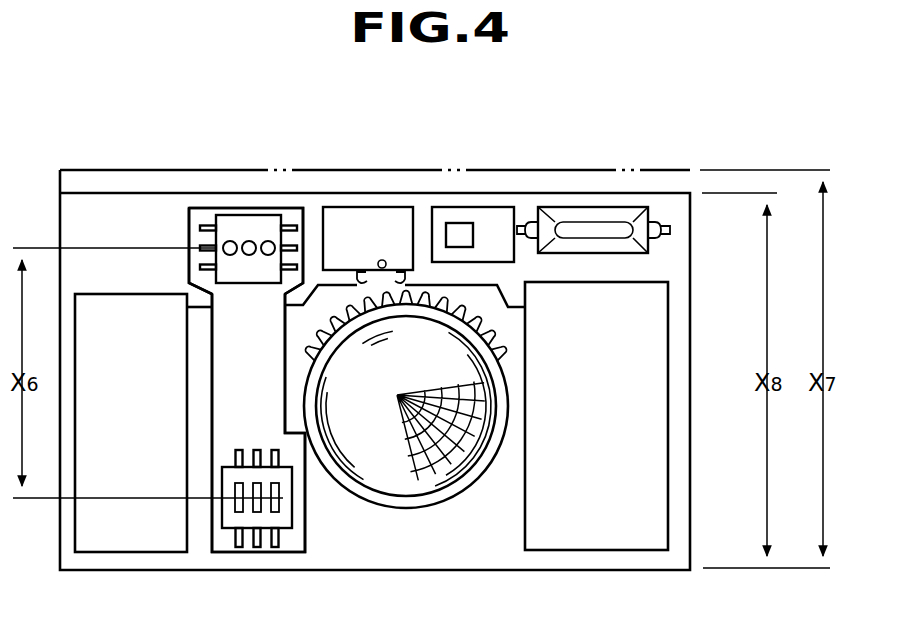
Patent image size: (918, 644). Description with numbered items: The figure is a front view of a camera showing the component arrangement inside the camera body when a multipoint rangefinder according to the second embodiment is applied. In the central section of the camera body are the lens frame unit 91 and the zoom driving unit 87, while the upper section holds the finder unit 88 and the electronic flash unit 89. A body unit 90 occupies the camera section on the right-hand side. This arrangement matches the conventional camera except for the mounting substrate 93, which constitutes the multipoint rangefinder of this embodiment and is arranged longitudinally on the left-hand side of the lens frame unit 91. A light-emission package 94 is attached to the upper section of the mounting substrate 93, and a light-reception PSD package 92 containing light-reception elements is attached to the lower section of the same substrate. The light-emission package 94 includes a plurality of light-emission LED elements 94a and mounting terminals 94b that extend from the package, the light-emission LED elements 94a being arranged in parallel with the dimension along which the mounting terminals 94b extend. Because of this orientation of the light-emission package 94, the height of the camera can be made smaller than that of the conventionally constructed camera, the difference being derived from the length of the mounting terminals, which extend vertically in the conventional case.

The zoom driving unit 87 is at (357, 215).
The finder unit 88 is at (477, 215).
The electronic flash unit 89 is at (607, 215).
The body unit 90 is at (583, 535).
The lens frame unit 91 is at (407, 483).
The light-reception PSD package 92 is at (233, 517).
The mounting substrate 93 is at (223, 415).
The light-emission package 94 is at (255, 222).
The light-emission LED elements 94a is at (232, 240).
The mounting terminals 94b is at (195, 222).